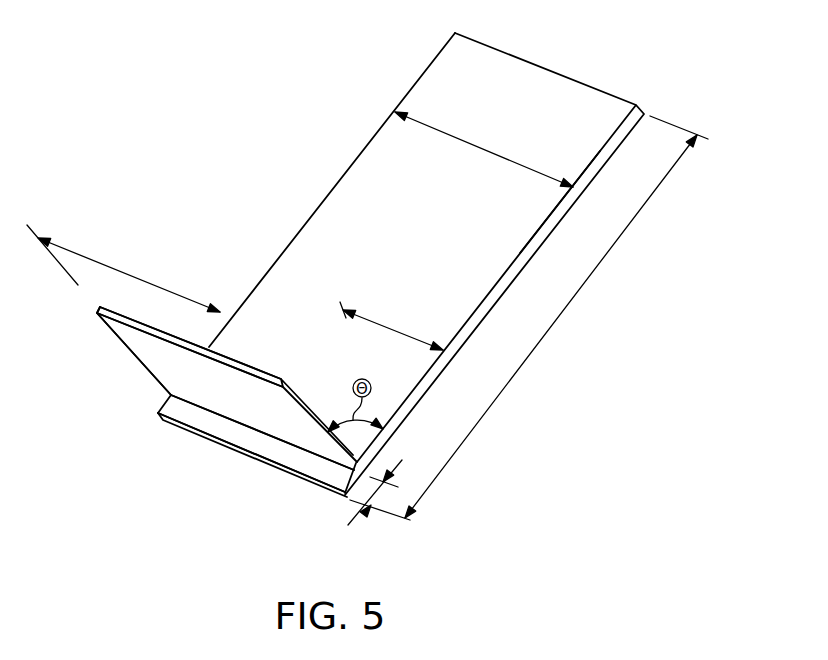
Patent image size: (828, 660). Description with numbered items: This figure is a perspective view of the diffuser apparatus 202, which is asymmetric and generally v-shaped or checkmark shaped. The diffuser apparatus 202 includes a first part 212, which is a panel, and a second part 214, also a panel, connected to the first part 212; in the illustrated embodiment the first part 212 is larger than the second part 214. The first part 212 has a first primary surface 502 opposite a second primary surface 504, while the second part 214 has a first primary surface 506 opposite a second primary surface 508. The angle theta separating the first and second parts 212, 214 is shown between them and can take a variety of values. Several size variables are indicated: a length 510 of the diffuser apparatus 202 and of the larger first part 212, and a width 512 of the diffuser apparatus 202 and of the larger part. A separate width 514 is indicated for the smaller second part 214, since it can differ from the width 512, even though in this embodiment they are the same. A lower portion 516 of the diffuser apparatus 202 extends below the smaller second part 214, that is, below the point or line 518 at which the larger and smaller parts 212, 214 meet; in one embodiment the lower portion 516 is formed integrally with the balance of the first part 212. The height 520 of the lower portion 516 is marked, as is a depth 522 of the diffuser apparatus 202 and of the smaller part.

The diffuser apparatus 202 is at (178, 195).
The first part 212 is at (361, 150).
The second part 214 is at (108, 317).
The first primary surface 502 is at (306, 212).
The second primary surface 504 is at (564, 228).
The first primary surface of second part 506 is at (120, 304).
The second primary surface of second part 508 is at (117, 346).
The length 510 is at (545, 337).
The width 512 is at (487, 148).
The width of smaller part 514 is at (130, 272).
The lower portion 516 is at (154, 402).
The point or line 518 is at (262, 442).
The height of lower portion 520 is at (383, 492).
The depth 522 is at (396, 330).